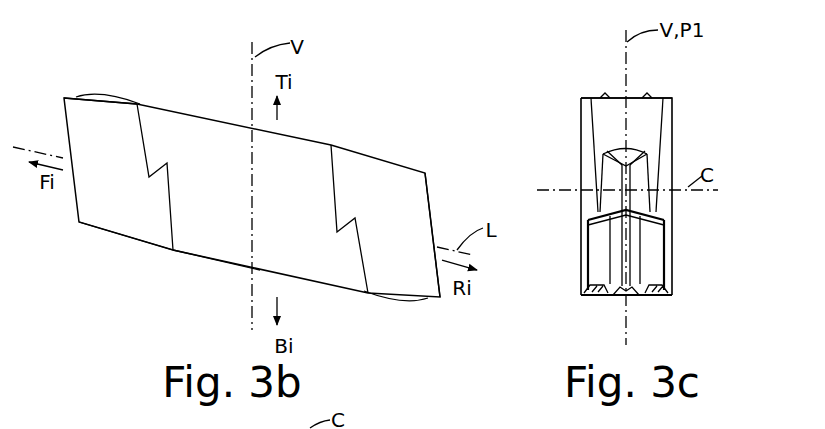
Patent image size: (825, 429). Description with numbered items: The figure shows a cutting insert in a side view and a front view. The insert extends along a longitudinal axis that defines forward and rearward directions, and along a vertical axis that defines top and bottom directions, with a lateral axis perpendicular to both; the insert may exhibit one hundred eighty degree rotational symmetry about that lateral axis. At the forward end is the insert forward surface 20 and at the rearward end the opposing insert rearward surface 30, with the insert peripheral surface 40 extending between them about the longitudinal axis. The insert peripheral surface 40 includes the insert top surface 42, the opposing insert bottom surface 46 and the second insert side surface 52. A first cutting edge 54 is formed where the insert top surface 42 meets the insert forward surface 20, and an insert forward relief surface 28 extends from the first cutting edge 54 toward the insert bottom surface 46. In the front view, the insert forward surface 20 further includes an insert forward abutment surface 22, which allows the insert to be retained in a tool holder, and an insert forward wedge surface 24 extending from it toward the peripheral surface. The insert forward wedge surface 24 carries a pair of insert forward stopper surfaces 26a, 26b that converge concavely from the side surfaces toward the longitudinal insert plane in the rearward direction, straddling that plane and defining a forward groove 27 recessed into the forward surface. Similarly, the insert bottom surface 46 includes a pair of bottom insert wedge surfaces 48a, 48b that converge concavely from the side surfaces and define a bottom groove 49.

In FIG. 3b, the insert forward surface 20 is at (48, 126).
In FIG. 3b, the insert top surface 42 is at (200, 101).
In FIG. 3c, the insert top surface 42 is at (617, 72).
In FIG. 3b, the insert peripheral surface 40 is at (324, 129).
In FIG. 3b, the insert rearward surface 30 is at (441, 211).
In FIG. 3b, the insert bottom surface 46 is at (169, 254).
In FIG. 3b, the second insert side surface 52 is at (237, 245).
In FIG. 3c, the insert forward abutment surface 22 is at (643, 135).
In FIG. 3c, the insert forward wedge surface 24 is at (605, 136).
In FIG. 3c, the first cutting edge 54 is at (627, 95).
In FIG. 3c, the insert forward relief surface 28 is at (645, 110).
In FIG. 3c, the insert forward stopper surface 26b is at (608, 177).
In FIG. 3c, the insert forward stopper surface 26a is at (638, 177).
In FIG. 3c, the forward groove 27 is at (616, 228).
In FIG. 3c, the bottom insert wedge surface 48b is at (592, 277).
In FIG. 3c, the bottom insert wedge surface 48a is at (648, 267).
In FIG. 3c, the bottom groove 49 is at (640, 293).